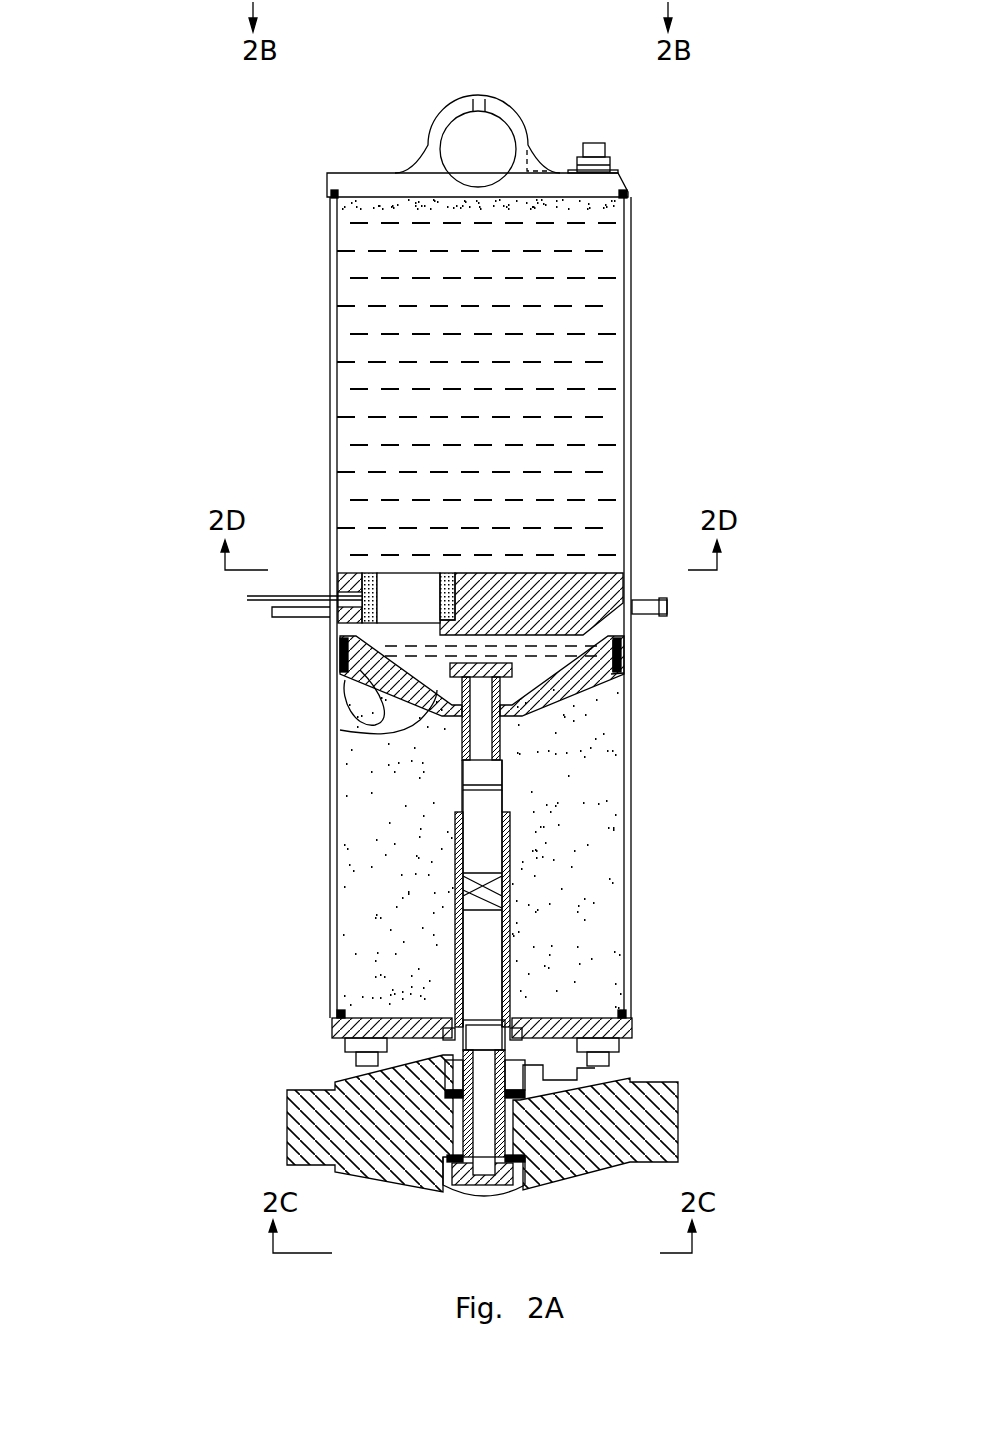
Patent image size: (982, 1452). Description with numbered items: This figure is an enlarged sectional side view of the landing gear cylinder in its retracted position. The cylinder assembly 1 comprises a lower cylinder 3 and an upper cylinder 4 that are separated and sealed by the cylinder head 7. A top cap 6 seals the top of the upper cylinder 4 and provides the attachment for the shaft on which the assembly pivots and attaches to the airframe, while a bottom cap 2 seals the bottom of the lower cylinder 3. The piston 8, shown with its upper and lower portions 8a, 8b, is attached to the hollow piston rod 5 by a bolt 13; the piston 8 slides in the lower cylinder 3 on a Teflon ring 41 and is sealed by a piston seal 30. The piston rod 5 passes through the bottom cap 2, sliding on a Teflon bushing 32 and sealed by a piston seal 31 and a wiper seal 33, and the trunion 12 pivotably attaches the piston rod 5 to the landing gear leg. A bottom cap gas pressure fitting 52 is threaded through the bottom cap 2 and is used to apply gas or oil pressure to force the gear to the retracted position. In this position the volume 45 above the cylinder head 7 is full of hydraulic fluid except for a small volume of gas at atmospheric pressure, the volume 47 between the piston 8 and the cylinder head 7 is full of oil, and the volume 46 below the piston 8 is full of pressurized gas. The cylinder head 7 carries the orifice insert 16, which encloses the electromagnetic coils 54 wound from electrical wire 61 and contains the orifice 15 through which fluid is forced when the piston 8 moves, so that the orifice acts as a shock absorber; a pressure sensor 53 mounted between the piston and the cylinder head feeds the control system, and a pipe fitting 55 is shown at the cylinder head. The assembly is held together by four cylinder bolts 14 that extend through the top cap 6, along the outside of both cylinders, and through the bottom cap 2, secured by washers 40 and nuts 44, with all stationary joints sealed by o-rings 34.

The cylinder assembly 1 is at (545, 607).
The bottom cap 2 is at (630, 1030).
The lower cylinder 3 is at (633, 810).
The upper cylinder 4 is at (632, 450).
The piston rod 5 is at (507, 837).
The top cap 6 is at (513, 118).
The cylinder head 7 is at (577, 572).
The piston 8 is at (423, 712).
The diaphragm upper portion 8a is at (360, 722).
The diaphragm lower portion 8b is at (440, 712).
The trunion 12 is at (580, 1190).
The bolt 13 is at (507, 657).
The cylinder bolts 14 is at (600, 145).
The orifice 15 is at (388, 573).
The orifice insert 16 is at (450, 573).
The piston seal 30 is at (340, 660).
The piston seal 31 is at (443, 1020).
The Teflon bushing 32 is at (517, 1020).
The wiper seal 33 is at (528, 1050).
The o-rings 34 is at (628, 192).
The washers 40 is at (615, 170).
The Teflon ring 41 is at (632, 690).
The nuts 44 is at (613, 157).
The volume 45 is at (563, 360).
The volume 46 is at (592, 866).
The volume 47 is at (621, 678).
The bottom cap gas pressure fitting 52 is at (563, 1110).
The pressure sensor 53 is at (272, 617).
The electromagnetic coils 54 is at (462, 573).
The pipe 55 is at (668, 605).
The electrical wire 61 is at (277, 597).